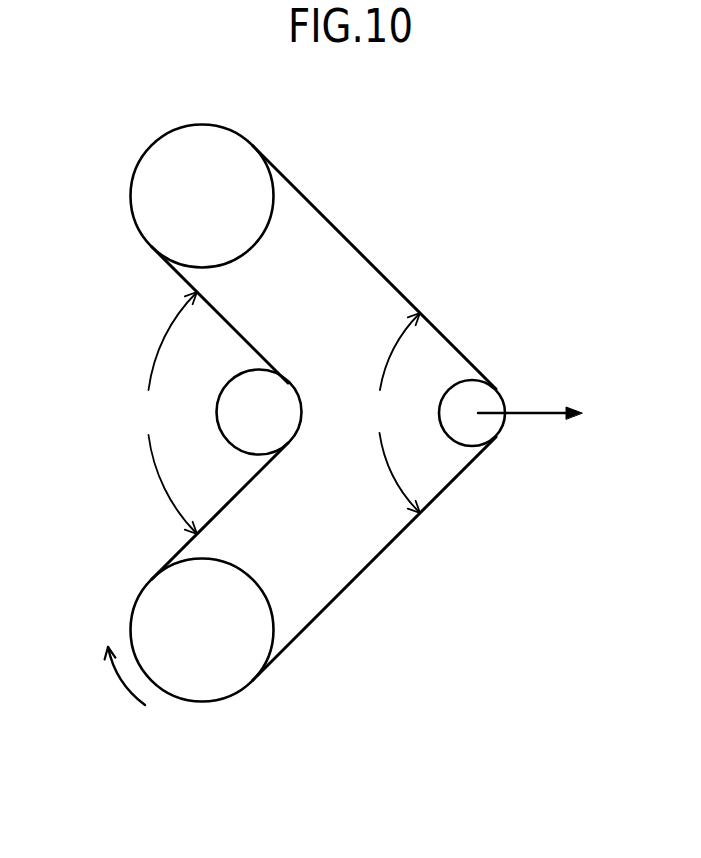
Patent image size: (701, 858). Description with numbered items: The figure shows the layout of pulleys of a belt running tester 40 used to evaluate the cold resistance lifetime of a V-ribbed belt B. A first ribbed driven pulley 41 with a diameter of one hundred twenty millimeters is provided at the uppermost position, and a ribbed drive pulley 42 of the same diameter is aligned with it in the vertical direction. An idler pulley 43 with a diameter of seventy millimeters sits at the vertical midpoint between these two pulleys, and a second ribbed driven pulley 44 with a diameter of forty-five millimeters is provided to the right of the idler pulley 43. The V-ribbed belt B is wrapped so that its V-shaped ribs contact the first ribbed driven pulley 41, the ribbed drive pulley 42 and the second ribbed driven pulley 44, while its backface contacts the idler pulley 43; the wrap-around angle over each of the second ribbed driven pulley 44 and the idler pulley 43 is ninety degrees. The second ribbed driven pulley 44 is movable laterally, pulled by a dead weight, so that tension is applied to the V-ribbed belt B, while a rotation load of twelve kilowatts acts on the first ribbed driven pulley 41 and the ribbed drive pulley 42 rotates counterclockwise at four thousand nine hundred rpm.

The belt running tester 40 is at (437, 248).
The first ribbed driven pulley 41 is at (150, 176).
The ribbed drive pulley 42 is at (150, 607).
The idler pulley 43 is at (230, 427).
The second ribbed driven pulley 44 is at (488, 427).
The V-ribbed belt B is at (356, 577).